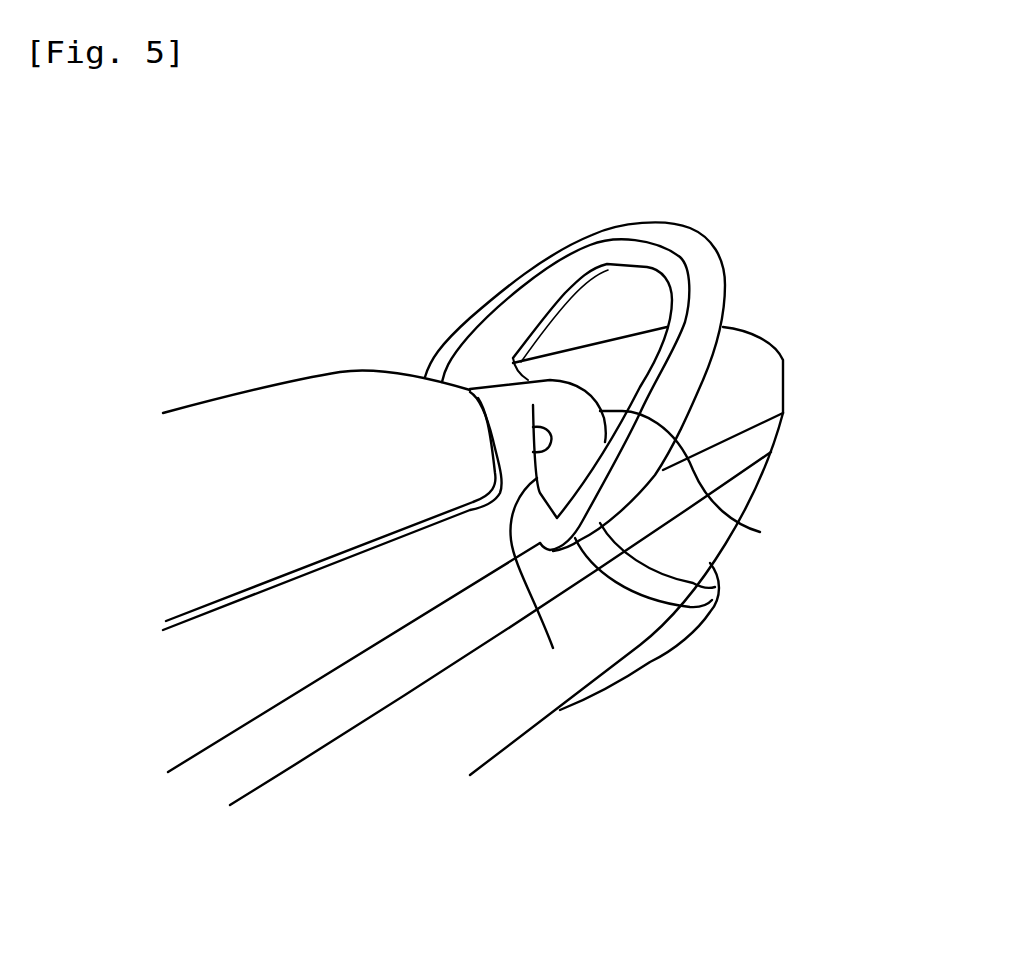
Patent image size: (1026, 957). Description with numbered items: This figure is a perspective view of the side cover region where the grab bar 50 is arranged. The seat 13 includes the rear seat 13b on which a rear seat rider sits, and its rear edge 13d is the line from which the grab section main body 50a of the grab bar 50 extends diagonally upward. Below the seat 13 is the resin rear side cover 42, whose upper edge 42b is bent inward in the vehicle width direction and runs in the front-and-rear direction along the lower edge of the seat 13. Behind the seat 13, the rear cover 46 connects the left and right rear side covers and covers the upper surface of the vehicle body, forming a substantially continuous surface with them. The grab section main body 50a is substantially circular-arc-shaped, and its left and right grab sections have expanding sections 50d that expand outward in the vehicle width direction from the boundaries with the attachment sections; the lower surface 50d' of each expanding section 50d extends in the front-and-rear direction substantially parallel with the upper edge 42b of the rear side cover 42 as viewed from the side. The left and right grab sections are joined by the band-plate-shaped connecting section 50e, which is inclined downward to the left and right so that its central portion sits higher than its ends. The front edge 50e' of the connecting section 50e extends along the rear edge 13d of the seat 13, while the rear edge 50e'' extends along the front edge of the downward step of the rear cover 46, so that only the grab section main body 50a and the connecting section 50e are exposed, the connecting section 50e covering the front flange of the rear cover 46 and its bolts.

The seat 13 is at (274, 381).
The rear seat 13b is at (353, 403).
The rear edge of the seat 13d is at (533, 452).
The rear side cover 42 is at (521, 742).
The upper edge 42b is at (323, 723).
The rear cover 46 is at (783, 360).
The grab bar 50 is at (588, 224).
The grab section main body 50a is at (727, 272).
The expanding section 50d is at (717, 578).
The lower surface of the expanding section 50d' is at (665, 636).
The connecting section 50e is at (523, 321).
The front edge of the connecting section 50e' is at (553, 583).
The rear edge of the connecting section 50e'' is at (734, 485).